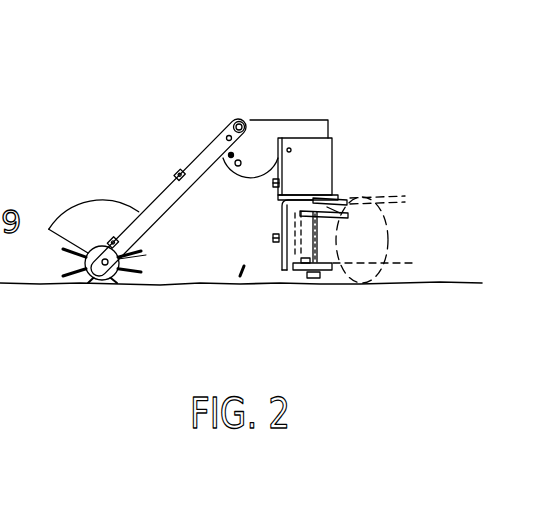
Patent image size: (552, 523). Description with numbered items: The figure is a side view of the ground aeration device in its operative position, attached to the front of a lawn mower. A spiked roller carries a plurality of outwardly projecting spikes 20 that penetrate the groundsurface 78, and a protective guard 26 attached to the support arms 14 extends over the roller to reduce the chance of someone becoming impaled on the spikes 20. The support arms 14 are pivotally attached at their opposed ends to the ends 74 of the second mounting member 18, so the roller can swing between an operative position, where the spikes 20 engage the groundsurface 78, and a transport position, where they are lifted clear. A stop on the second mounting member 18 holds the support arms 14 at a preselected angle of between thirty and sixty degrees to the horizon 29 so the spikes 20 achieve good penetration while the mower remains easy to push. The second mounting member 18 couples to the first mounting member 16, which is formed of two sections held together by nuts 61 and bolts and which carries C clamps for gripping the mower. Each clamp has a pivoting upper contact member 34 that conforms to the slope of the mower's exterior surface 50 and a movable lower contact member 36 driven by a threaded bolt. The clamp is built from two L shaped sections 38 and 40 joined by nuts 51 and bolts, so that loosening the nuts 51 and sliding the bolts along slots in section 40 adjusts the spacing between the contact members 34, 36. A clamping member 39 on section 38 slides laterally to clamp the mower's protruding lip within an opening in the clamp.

The support arms 14 is at (192, 162).
The first mounting member 16 is at (318, 163).
The second mounting member 18 is at (302, 128).
The spikes 20 is at (75, 273).
The protective guard 26 is at (100, 217).
The horizon 29 is at (473, 277).
The upper contact member 34 is at (337, 201).
The lower contact member 36 is at (327, 207).
The L shaped section 38 is at (290, 266).
The clamping member 39 is at (316, 272).
The L shaped section 40 is at (280, 212).
The exterior surface 50 is at (383, 196).
The nuts 51 is at (274, 237).
The nuts 61 is at (274, 182).
The ends of second mounting member 74 is at (227, 127).
The groundsurface 78 is at (242, 267).